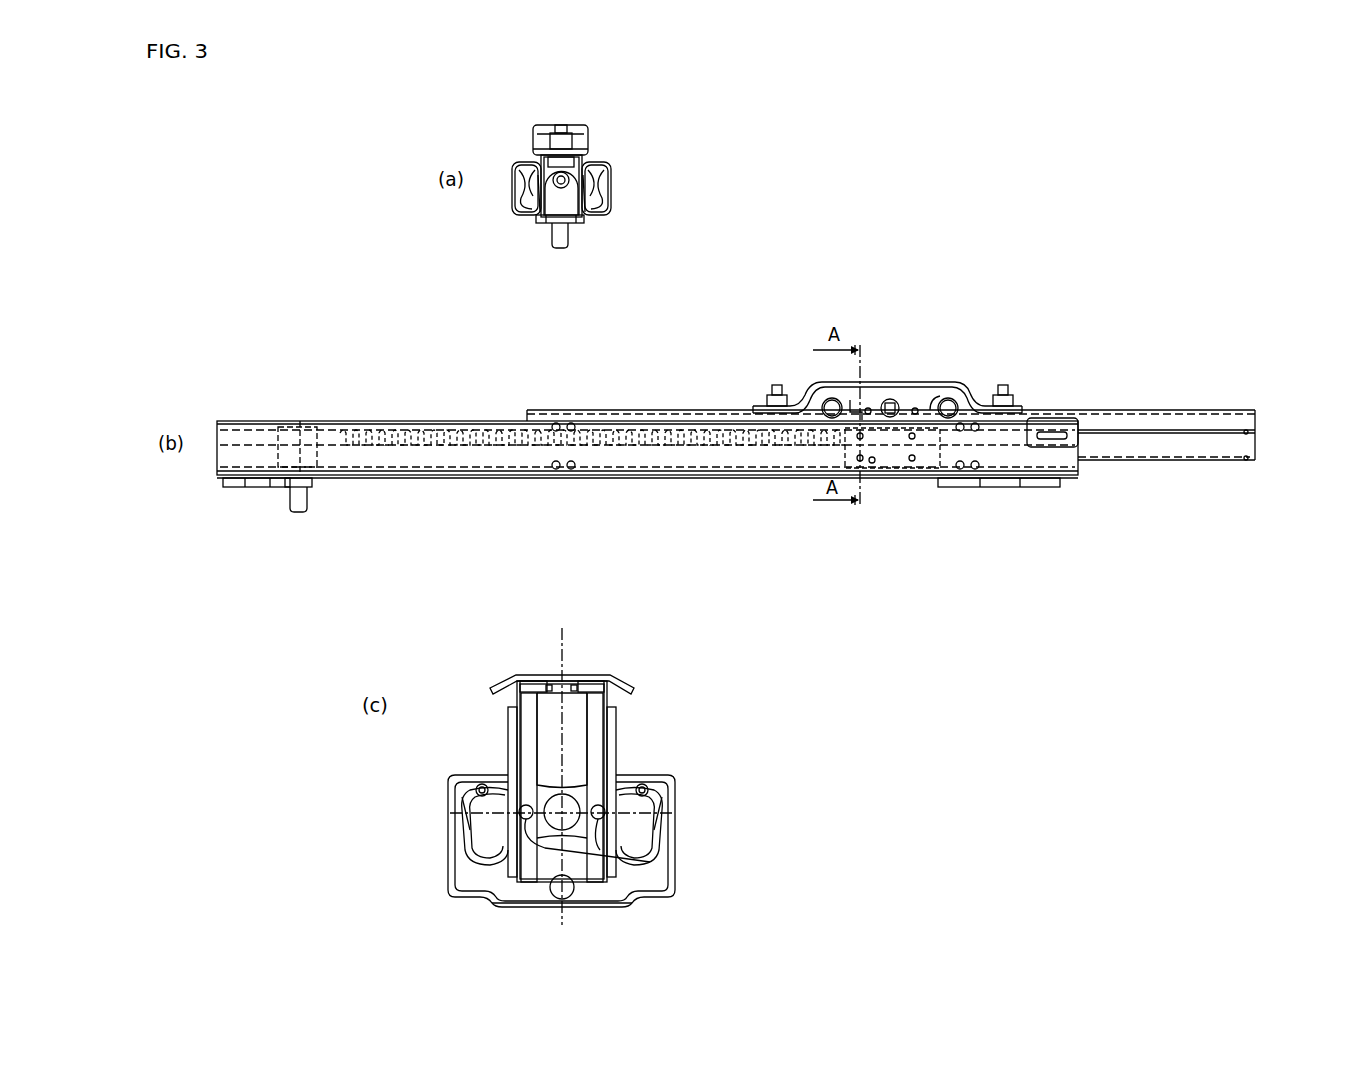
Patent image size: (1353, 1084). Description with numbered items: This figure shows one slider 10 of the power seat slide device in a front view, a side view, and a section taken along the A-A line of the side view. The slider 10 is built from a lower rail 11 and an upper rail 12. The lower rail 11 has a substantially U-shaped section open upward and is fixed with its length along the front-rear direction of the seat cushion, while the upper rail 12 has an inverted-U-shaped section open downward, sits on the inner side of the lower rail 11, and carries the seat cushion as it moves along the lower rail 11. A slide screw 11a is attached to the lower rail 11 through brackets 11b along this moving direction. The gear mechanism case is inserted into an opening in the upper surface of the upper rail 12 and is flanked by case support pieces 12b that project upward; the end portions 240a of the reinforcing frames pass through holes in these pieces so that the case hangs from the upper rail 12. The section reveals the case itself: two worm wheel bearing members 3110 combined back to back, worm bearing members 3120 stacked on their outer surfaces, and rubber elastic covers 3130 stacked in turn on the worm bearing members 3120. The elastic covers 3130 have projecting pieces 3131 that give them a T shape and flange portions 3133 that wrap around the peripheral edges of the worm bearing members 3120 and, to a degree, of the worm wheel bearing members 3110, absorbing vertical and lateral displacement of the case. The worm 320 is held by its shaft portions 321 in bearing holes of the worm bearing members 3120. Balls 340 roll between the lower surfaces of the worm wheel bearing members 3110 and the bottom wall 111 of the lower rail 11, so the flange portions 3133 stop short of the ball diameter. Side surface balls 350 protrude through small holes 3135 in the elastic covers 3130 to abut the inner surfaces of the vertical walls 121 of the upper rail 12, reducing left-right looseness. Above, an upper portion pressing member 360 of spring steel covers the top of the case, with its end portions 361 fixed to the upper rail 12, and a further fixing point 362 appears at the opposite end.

The slider 10 is at (351, 416).
The lower rail 11 is at (515, 215).
The slide screw 11a is at (566, 186).
The bracket 11b is at (566, 205).
The bottom wall 111 is at (542, 219).
The upper rail 12 is at (586, 163).
The case support piece 12b is at (930, 400).
The vertical wall 121 is at (594, 199).
The end portion of reinforcing frame 240a is at (825, 399).
The worm 320 is at (877, 399).
The shaft portion 321 is at (890, 398).
The ball 340 is at (572, 896).
The side surface ball 350 is at (650, 862).
The upper portion pressing member 360 is at (537, 126).
The end portion of upper portion pressing member 361 is at (759, 408).
The bolt 362 is at (1017, 408).
The worm wheel bearing member 3110 is at (545, 755).
The worm bearing member 3120 is at (595, 705).
The elastic cover 3130 is at (609, 690).
The projecting piece 3131 is at (530, 682).
The flange portion 3133 is at (549, 684).
The small hole 3135 is at (520, 815).